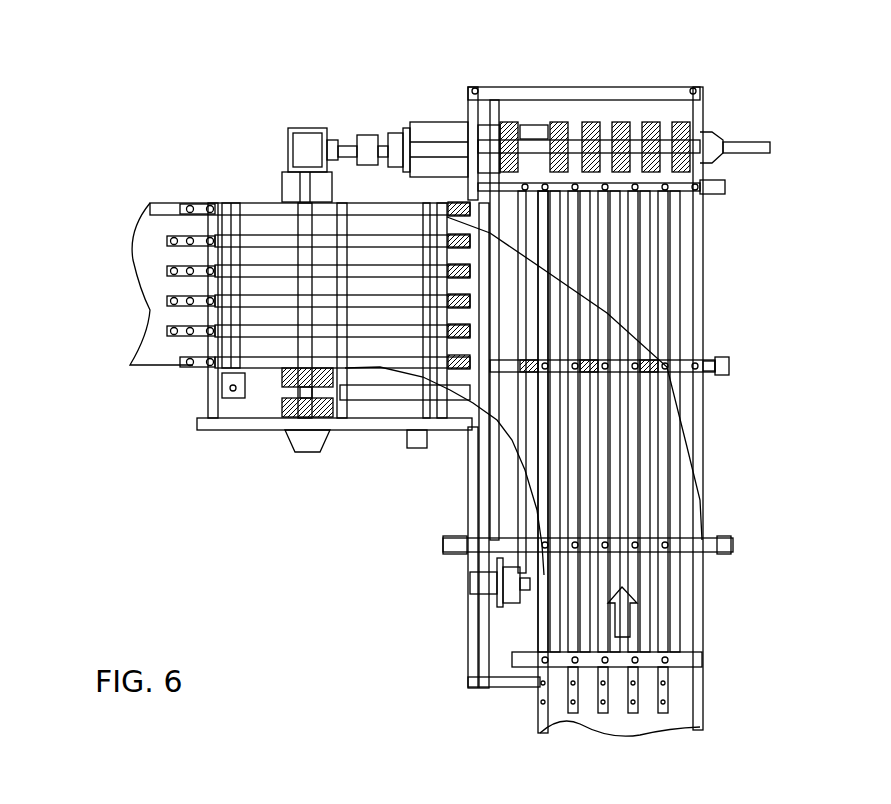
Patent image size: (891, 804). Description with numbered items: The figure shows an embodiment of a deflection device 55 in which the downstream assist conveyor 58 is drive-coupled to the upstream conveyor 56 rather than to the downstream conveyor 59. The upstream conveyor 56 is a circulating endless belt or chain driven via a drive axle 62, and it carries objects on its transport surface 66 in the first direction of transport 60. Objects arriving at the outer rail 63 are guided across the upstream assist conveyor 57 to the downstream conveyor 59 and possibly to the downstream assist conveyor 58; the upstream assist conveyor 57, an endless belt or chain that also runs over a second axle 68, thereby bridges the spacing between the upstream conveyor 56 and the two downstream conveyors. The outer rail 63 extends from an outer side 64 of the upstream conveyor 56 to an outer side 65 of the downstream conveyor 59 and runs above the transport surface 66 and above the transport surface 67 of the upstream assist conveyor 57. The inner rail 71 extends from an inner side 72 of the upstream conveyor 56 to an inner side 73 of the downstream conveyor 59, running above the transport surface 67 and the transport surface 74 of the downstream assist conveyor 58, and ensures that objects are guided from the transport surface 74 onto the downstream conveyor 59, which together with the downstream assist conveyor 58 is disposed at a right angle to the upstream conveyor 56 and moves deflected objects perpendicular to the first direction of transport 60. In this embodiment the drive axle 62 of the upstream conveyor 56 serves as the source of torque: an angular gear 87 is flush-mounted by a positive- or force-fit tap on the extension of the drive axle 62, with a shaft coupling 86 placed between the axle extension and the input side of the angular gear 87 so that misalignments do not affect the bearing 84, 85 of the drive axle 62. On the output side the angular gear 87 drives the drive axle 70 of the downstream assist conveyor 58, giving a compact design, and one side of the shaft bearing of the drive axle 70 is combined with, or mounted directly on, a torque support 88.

The deflection device 55 is at (825, 97).
The upstream conveyor 56 is at (622, 733).
The upstream assist conveyor 57 is at (497, 583).
The downstream assist conveyor 58 is at (372, 427).
The downstream conveyor 59 is at (130, 243).
The first direction of transport 60 is at (630, 618).
The drive axle 62 is at (636, 135).
The outer rail 63 is at (712, 358).
The outer side of the upstream conveyor 64 is at (705, 617).
The outer side of the downstream conveyor 65 is at (202, 203).
The transport surface of the upstream conveyor 66 is at (652, 470).
The transport surface of the upstream assist conveyor 67 is at (503, 512).
The second axle 68 is at (488, 613).
The drive axle of the downstream assist conveyor 70 is at (287, 398).
The inner rail 71 is at (500, 437).
The inner side of the upstream conveyor 72 is at (538, 690).
The inner side of the downstream conveyor 73 is at (193, 368).
The transport surface of the downstream assist conveyor 74 is at (387, 410).
The bearing 84 is at (718, 130).
The bearing 85 is at (407, 133).
The coupling 86 is at (360, 135).
The angular gear 87 is at (303, 138).
The torque support 88 is at (280, 183).